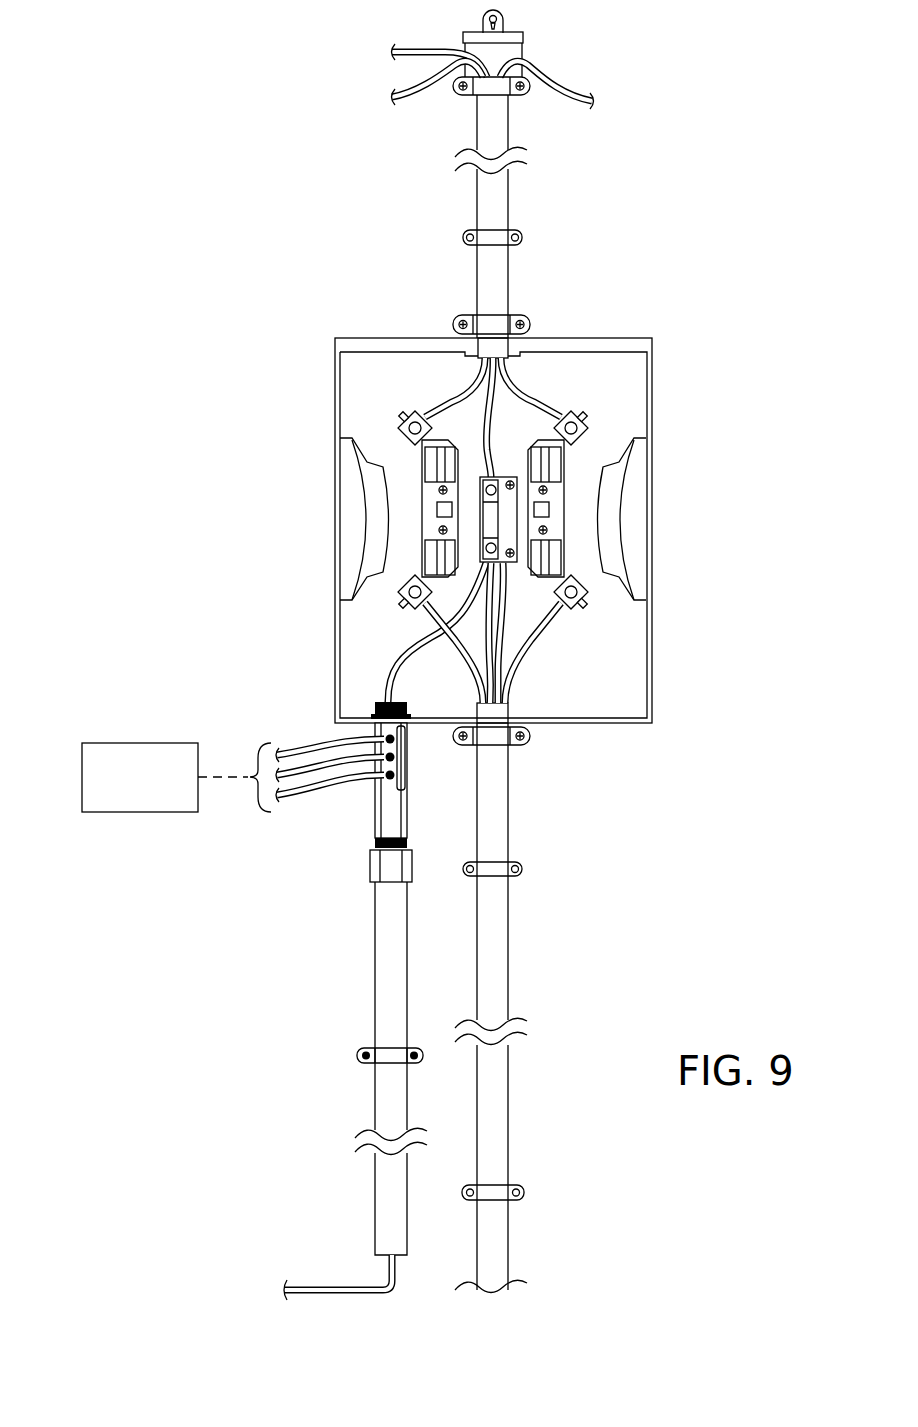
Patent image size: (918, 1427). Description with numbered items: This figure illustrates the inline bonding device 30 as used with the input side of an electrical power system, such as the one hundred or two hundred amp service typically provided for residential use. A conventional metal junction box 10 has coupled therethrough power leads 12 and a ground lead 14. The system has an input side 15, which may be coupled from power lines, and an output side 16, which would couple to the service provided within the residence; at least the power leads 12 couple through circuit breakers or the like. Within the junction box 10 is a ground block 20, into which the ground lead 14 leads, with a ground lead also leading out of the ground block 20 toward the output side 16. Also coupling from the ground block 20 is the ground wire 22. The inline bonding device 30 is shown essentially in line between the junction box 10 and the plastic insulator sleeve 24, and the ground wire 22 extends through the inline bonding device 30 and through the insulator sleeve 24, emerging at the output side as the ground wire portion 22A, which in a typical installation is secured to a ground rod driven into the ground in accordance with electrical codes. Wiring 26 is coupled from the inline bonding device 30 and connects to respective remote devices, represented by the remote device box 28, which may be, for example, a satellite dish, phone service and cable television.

The metal junction box 10 is at (310, 549).
The power leads 12 is at (453, 400).
The ground lead 14 is at (488, 408).
The input side 15 is at (535, 184).
The output side 16 is at (528, 800).
The ground block 20 is at (468, 580).
The ground wire 22 is at (400, 655).
The ground wire output side 22A is at (328, 1290).
The plastic insulator sleeve 24 is at (386, 968).
The wiring 26 is at (315, 733).
The remote device box 28 is at (117, 743).
The inline bonding device 30 is at (358, 803).